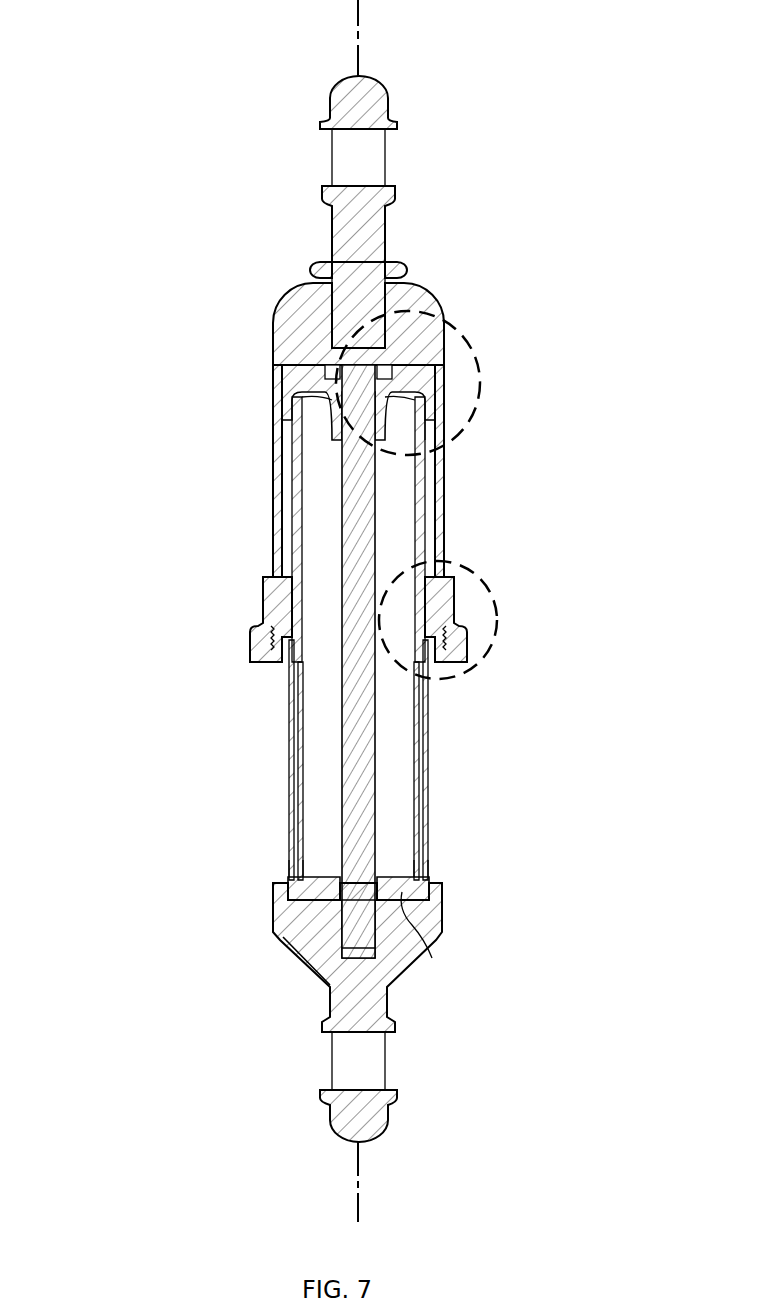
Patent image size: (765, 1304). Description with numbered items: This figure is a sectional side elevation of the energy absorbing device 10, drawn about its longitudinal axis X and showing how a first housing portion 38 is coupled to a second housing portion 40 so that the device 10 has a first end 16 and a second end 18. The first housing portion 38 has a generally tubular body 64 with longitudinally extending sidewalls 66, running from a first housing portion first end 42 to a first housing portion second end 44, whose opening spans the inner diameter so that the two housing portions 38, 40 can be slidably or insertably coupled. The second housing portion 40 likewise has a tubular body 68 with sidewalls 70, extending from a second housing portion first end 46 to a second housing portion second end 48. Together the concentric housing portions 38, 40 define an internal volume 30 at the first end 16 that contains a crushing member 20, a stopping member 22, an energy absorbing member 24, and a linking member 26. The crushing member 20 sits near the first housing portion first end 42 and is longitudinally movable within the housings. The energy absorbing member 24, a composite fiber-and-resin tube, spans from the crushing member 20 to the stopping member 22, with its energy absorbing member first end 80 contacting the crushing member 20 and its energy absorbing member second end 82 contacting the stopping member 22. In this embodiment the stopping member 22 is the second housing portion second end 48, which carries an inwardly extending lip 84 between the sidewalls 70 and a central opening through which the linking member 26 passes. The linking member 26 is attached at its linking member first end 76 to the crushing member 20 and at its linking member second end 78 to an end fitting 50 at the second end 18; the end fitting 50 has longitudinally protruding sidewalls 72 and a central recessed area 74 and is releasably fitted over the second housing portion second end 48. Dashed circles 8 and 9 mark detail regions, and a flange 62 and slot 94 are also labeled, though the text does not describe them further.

The longitudinal axis X is at (358, 25).
The energy absorbing device 10 is at (520, 110).
The first end 16 is at (173, 425).
The second end 18 is at (226, 945).
The crushing member 20 is at (285, 378).
The stopping member 22 is at (426, 941).
The energy absorbing member 24 is at (437, 510).
The linking member 26 is at (367, 742).
The internal volume 30 is at (300, 498).
The first housing portion 38 is at (272, 335).
The second housing portion 40 is at (288, 815).
The first housing portion first end 42 is at (287, 298).
The first housing portion second end 44 is at (240, 655).
The second housing portion first end 46 is at (255, 668).
The second housing portion second end 48 is at (275, 873).
The end fitting 50 is at (445, 910).
The flange 62 is at (258, 600).
The tubular body 64 is at (272, 413).
The sidewalls 66 is at (272, 455).
The tubular body 68 is at (288, 730).
The sidewalls 70 is at (292, 770).
The longitudinally protruding sidewalls 72 is at (437, 882).
The central recessed area 74 is at (303, 915).
The linking member first end 76 is at (360, 376).
The linking member second end 78 is at (327, 983).
The energy absorbing member first end 80 is at (428, 425).
The energy absorbing member second end 82 is at (428, 825).
The lip 84 is at (392, 876).
The slot 94 is at (407, 398).
The detail circle FIG. 8 is at (482, 378).
The detail circle FIG. 9 is at (505, 618).